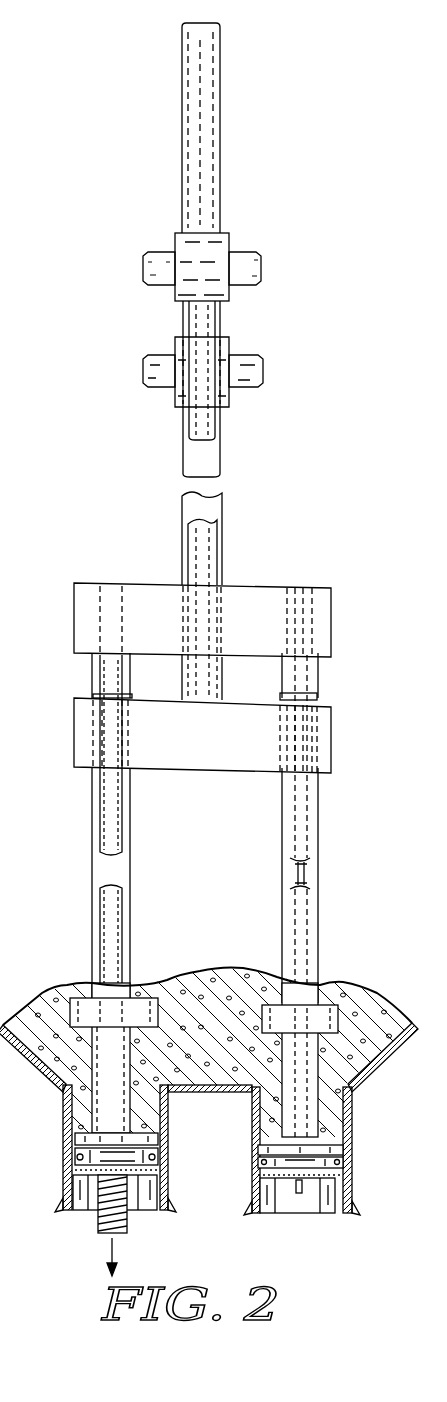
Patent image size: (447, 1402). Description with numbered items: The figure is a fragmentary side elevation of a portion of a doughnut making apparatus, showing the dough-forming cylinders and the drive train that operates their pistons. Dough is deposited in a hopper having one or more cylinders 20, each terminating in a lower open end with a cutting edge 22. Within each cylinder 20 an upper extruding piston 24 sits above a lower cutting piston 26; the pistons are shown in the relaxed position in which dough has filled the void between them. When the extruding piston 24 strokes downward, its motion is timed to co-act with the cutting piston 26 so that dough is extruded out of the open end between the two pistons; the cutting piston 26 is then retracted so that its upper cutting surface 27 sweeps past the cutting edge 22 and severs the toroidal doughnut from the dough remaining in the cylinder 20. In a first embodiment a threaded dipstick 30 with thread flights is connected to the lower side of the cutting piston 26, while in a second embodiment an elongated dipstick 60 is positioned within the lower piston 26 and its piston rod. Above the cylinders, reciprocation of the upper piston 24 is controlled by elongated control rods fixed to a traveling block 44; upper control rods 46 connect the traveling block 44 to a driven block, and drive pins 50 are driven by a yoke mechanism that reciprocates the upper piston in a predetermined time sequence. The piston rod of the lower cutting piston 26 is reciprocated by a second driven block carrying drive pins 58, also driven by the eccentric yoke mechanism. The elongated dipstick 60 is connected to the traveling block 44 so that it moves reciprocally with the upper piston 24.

The cylinder 20 is at (38, 1062).
The cutting edge 22 is at (70, 1210).
The upper extruding piston 24 is at (150, 987).
The lower cutting piston 26 is at (157, 1147).
The upper cutting surface 27 is at (333, 1132).
The threaded dipstick 30 is at (127, 1215).
The traveling block 44 is at (331, 622).
The upper control rods 46 is at (217, 538).
The drive pins 50 is at (252, 253).
The drive pins 58 is at (255, 357).
The elongated dipstick 60 is at (302, 1187).